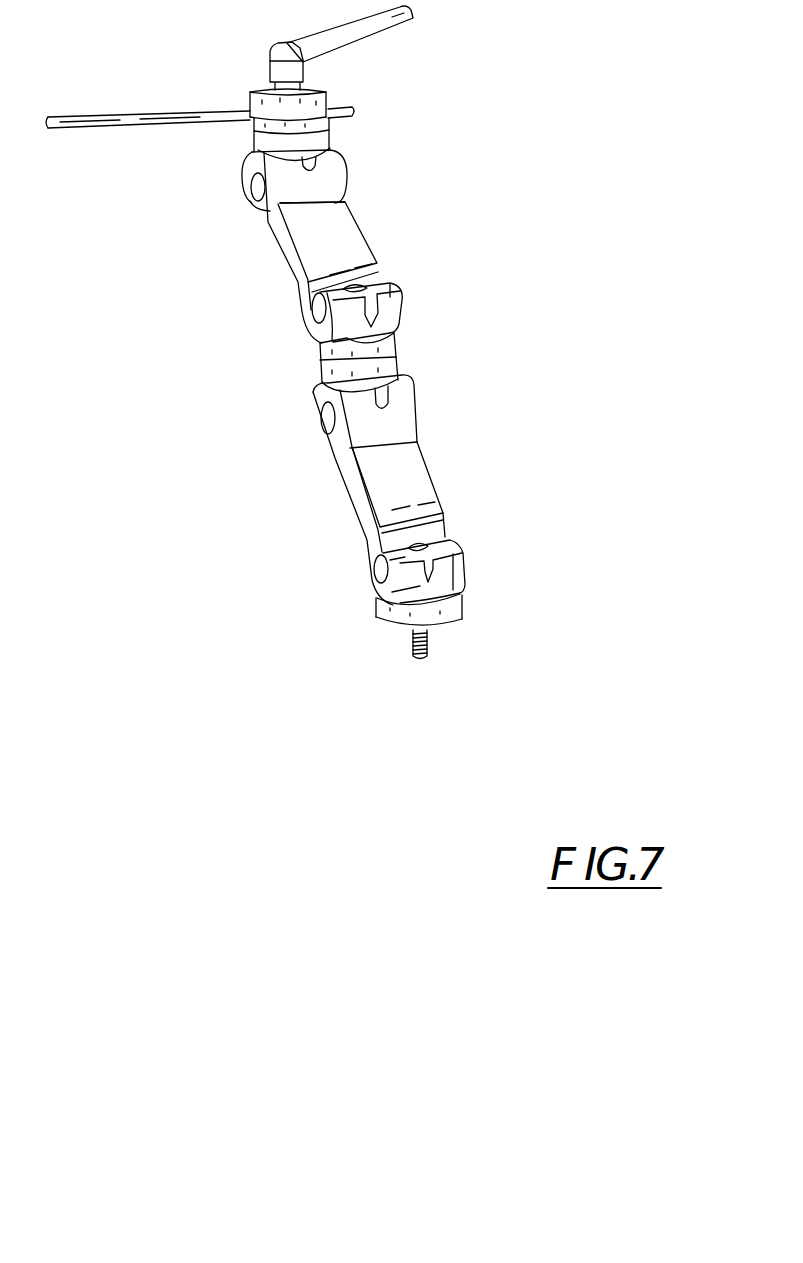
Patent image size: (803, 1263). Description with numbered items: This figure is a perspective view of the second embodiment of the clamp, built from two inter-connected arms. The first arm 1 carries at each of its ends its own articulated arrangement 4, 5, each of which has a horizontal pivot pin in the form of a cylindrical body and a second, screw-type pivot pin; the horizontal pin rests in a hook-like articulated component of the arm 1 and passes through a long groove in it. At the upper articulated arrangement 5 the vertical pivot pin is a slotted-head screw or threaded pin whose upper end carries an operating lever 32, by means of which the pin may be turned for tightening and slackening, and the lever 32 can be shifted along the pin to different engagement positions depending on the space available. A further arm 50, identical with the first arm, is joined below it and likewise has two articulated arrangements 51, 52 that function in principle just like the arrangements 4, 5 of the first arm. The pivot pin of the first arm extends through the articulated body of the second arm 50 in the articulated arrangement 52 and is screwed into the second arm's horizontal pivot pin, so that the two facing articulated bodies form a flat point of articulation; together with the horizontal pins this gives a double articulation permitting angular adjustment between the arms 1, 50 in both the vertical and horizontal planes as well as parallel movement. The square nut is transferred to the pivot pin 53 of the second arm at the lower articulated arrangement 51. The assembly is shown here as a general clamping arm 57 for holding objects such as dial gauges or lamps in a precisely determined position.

The operating lever 32 is at (333, 30).
The clamping arm 57 is at (133, 120).
The articulated arrangement 5 is at (247, 190).
The arm 1 is at (290, 252).
The articulated arrangement 4 is at (295, 320).
The articulated arrangement 52 is at (311, 420).
The further arm 50 is at (352, 489).
The articulated arrangement 51 is at (354, 578).
The pivot pin 53 is at (410, 649).